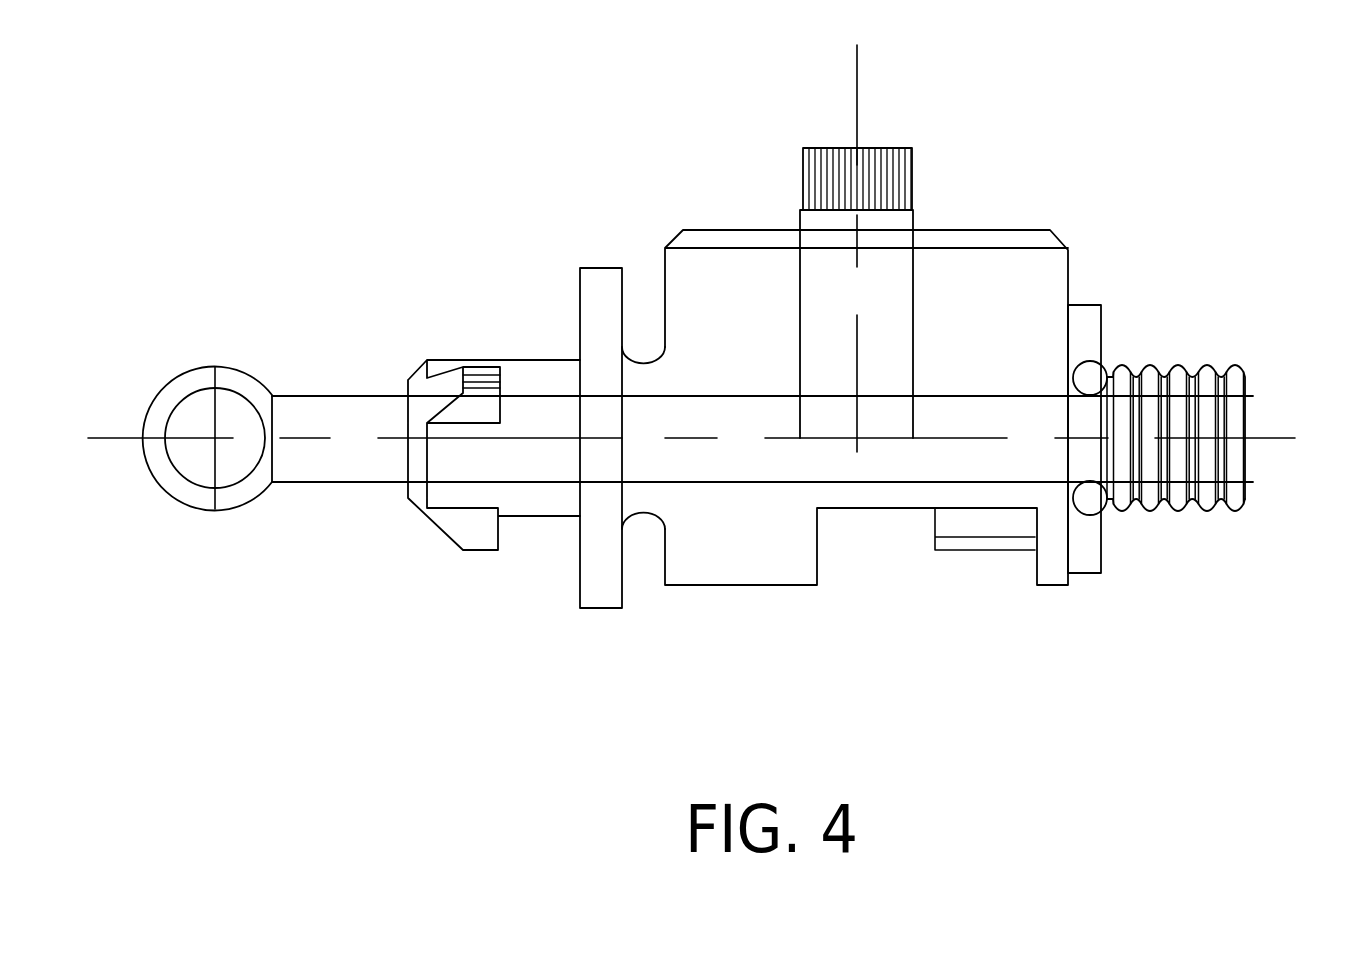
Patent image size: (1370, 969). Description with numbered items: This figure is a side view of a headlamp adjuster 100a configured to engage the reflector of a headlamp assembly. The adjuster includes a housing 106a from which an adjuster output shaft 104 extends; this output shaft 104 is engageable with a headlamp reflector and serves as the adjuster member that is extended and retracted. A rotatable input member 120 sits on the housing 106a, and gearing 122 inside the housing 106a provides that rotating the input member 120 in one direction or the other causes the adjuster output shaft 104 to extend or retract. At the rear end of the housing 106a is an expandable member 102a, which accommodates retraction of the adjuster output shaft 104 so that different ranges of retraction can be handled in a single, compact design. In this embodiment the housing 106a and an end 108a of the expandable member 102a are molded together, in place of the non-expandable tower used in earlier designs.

The headlamp adjuster 100a is at (1093, 188).
The expandable member 102a is at (1222, 352).
The adjuster output shaft 104 is at (382, 496).
The housing 106a is at (1113, 316).
The end of the expandable member 108a is at (1088, 518).
The rotatable input member 120 is at (928, 193).
The gearing 122 is at (925, 420).